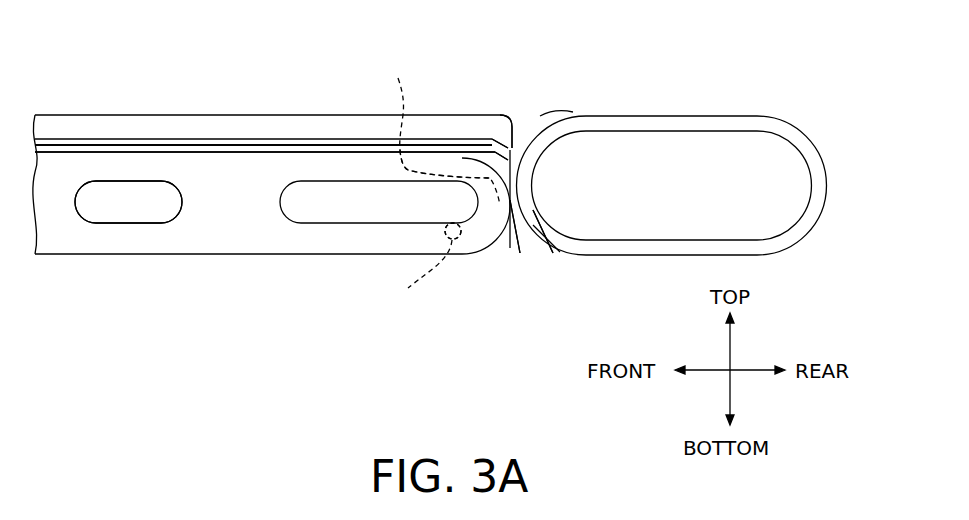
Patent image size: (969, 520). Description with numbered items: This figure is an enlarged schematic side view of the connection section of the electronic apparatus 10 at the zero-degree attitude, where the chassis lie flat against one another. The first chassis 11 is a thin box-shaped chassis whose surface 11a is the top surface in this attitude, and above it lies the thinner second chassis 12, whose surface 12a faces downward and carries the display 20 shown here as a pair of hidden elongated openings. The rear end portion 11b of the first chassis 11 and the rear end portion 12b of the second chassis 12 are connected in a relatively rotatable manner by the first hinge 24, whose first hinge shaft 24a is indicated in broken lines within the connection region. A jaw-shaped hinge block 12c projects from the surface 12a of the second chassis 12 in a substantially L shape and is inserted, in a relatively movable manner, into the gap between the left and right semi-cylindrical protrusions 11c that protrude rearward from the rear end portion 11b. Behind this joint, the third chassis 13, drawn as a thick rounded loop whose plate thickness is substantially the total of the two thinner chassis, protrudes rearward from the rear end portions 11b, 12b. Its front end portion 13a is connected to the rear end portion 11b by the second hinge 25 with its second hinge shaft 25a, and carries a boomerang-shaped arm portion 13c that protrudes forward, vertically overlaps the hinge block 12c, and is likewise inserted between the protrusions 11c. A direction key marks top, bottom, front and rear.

The electronic apparatus 10 is at (92, 23).
The first chassis 11 is at (260, 268).
The surface of the first chassis 11a is at (105, 150).
The rear end portion of the first chassis 11b is at (495, 148).
The semi-cylindrical protrusion 11c is at (518, 235).
The second chassis 12 is at (255, 102).
The surface of the second chassis 12a is at (143, 152).
The rear end portion of the second chassis 12b is at (512, 120).
The hinge block 12c is at (555, 110).
The third chassis 13 is at (678, 102).
The front end portion of the third chassis 13a is at (545, 248).
The arm portion 13c is at (503, 240).
The display 20 is at (128, 202).
The first hinge 24 is at (445, 164).
The first hinge shaft 24a is at (427, 128).
The second hinge 25 is at (453, 231).
The second hinge shaft 25a is at (412, 274).